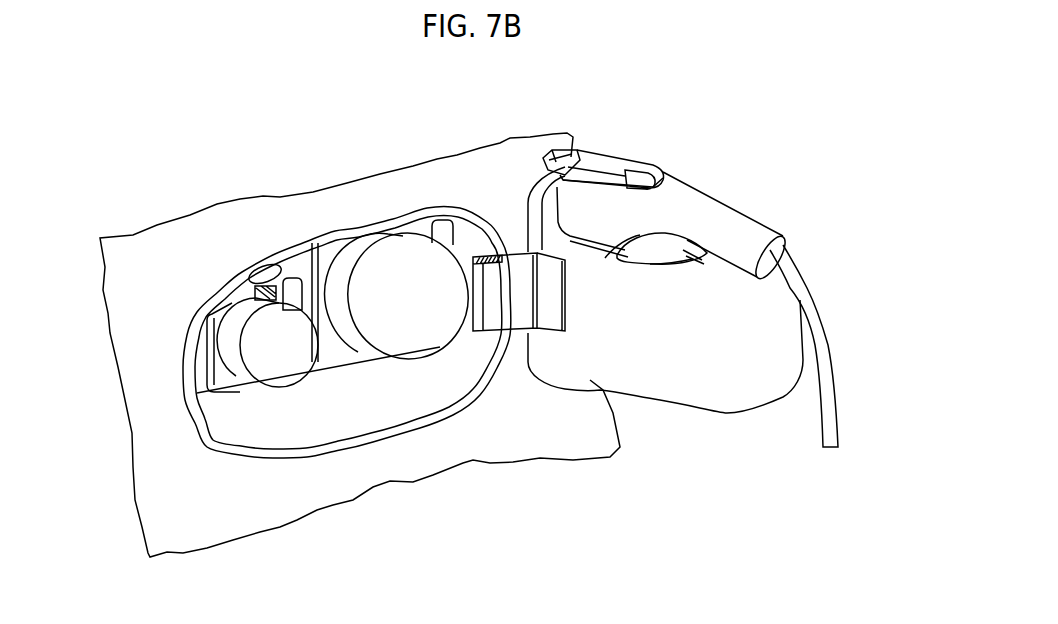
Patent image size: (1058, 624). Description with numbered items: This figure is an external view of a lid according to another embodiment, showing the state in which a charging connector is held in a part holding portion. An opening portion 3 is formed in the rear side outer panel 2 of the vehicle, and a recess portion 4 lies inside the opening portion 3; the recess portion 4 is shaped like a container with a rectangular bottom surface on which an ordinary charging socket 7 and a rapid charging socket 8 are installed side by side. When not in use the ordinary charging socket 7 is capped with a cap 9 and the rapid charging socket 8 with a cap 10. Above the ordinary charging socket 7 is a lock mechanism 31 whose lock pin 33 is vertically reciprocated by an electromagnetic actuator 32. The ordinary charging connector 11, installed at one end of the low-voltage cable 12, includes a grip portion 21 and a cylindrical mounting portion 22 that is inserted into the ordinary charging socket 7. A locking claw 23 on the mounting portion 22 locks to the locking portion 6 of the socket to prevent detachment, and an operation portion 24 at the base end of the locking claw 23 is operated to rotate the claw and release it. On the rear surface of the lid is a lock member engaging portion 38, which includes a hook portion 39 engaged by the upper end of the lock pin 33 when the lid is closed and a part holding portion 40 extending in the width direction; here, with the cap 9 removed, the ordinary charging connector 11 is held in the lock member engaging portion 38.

The outer panel 2 is at (142, 258).
The opening portion 3 is at (433, 207).
The recess portion 4 is at (277, 433).
The locking portion 6 is at (257, 293).
The ordinary charging socket 7 is at (227, 342).
The rapid charging socket 8 is at (363, 251).
The cap 9 is at (270, 355).
The cap 10 is at (403, 273).
The ordinary charging connector 11 is at (695, 172).
The low-voltage cable 12 is at (820, 350).
The grip portion 21 is at (720, 207).
The mounting portion 22 is at (547, 182).
The locking claw 23 is at (565, 157).
The operation portion 24 is at (640, 163).
The lock mechanism 31 is at (298, 250).
The electromagnetic actuator 32 is at (243, 280).
The lock pin 33 is at (265, 266).
The lock member engaging portion 38 is at (663, 326).
The hook portion 39 is at (657, 263).
The part holding portion 40 is at (613, 255).